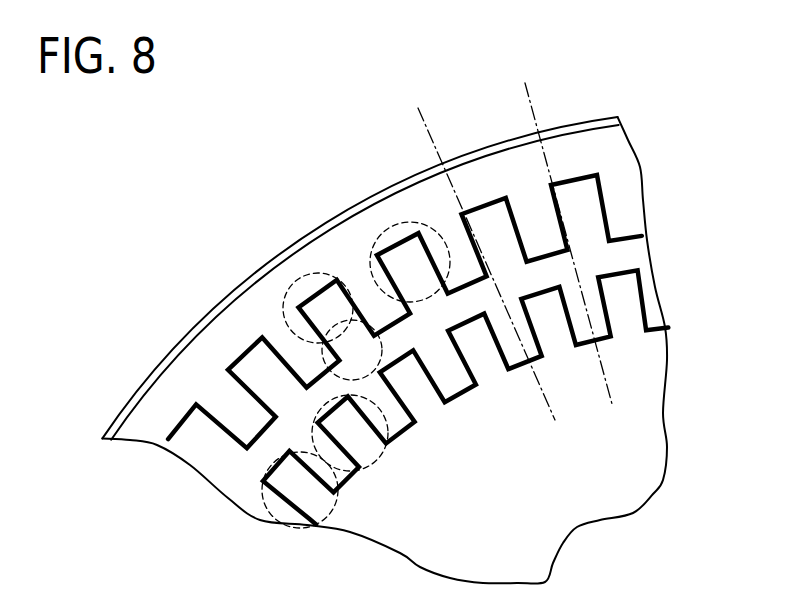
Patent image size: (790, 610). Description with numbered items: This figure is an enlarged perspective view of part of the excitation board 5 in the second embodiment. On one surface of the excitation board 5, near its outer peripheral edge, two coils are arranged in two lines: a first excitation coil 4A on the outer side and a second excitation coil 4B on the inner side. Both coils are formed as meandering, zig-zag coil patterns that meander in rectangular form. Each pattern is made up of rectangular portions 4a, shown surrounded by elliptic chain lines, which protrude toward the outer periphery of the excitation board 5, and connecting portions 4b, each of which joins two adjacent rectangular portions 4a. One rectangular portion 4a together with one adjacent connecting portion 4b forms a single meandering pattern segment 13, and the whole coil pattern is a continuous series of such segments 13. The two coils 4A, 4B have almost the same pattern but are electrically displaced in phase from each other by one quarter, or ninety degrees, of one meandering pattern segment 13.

The excitation board 5 is at (227, 292).
The first excitation coil 4A is at (607, 204).
The second excitation coil 4B is at (643, 297).
The rectangular portion 4a is at (392, 238).
The connecting portion 4b is at (392, 326).
The meandering pattern segment 13 is at (523, 84).